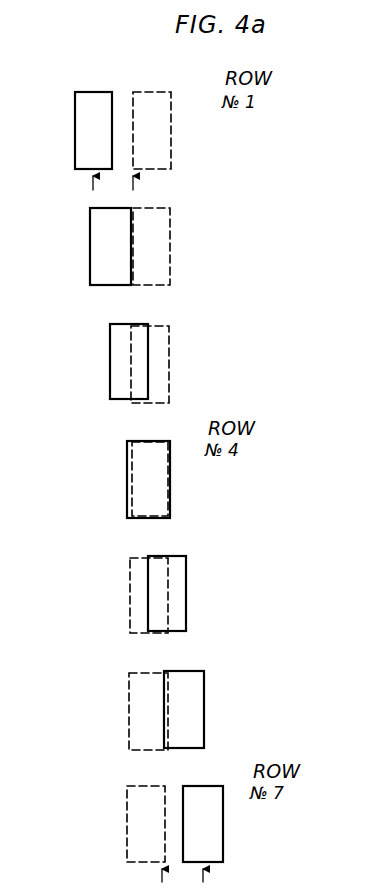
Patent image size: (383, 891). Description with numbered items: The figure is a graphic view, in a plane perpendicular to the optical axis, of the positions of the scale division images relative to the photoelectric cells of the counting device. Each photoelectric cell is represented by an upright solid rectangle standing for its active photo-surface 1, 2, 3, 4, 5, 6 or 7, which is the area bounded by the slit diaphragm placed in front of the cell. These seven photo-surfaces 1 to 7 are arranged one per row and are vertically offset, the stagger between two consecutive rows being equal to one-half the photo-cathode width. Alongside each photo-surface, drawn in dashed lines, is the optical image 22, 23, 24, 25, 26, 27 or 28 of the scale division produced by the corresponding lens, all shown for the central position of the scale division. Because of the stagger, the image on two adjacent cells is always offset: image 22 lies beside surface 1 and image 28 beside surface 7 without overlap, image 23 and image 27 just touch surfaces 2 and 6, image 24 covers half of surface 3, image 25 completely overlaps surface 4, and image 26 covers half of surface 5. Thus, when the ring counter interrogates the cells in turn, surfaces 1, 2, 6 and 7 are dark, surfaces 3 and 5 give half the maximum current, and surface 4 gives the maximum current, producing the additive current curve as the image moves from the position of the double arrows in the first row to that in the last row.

The active photo-surface of photoelectric cell 1 is at (83, 146).
The active photo-surface of photoelectric cell 2 is at (97, 265).
The active photo-surface of photoelectric cell 3 is at (115, 380).
The active photo-surface of photoelectric cell 4 is at (128, 495).
The active photo-surface of photoelectric cell 5 is at (180, 607).
The active photo-surface of photoelectric cell 6 is at (198, 723).
The active photo-surface of photoelectric cell 7 is at (215, 840).
The optical image of scale division 22 is at (168, 146).
The optical image of scale division 23 is at (167, 258).
The optical image of scale division 24 is at (168, 375).
The optical image of scale division 25 is at (170, 497).
The optical image of scale division 26 is at (130, 614).
The optical image of scale division 27 is at (130, 730).
The optical image of scale division 28 is at (128, 845).